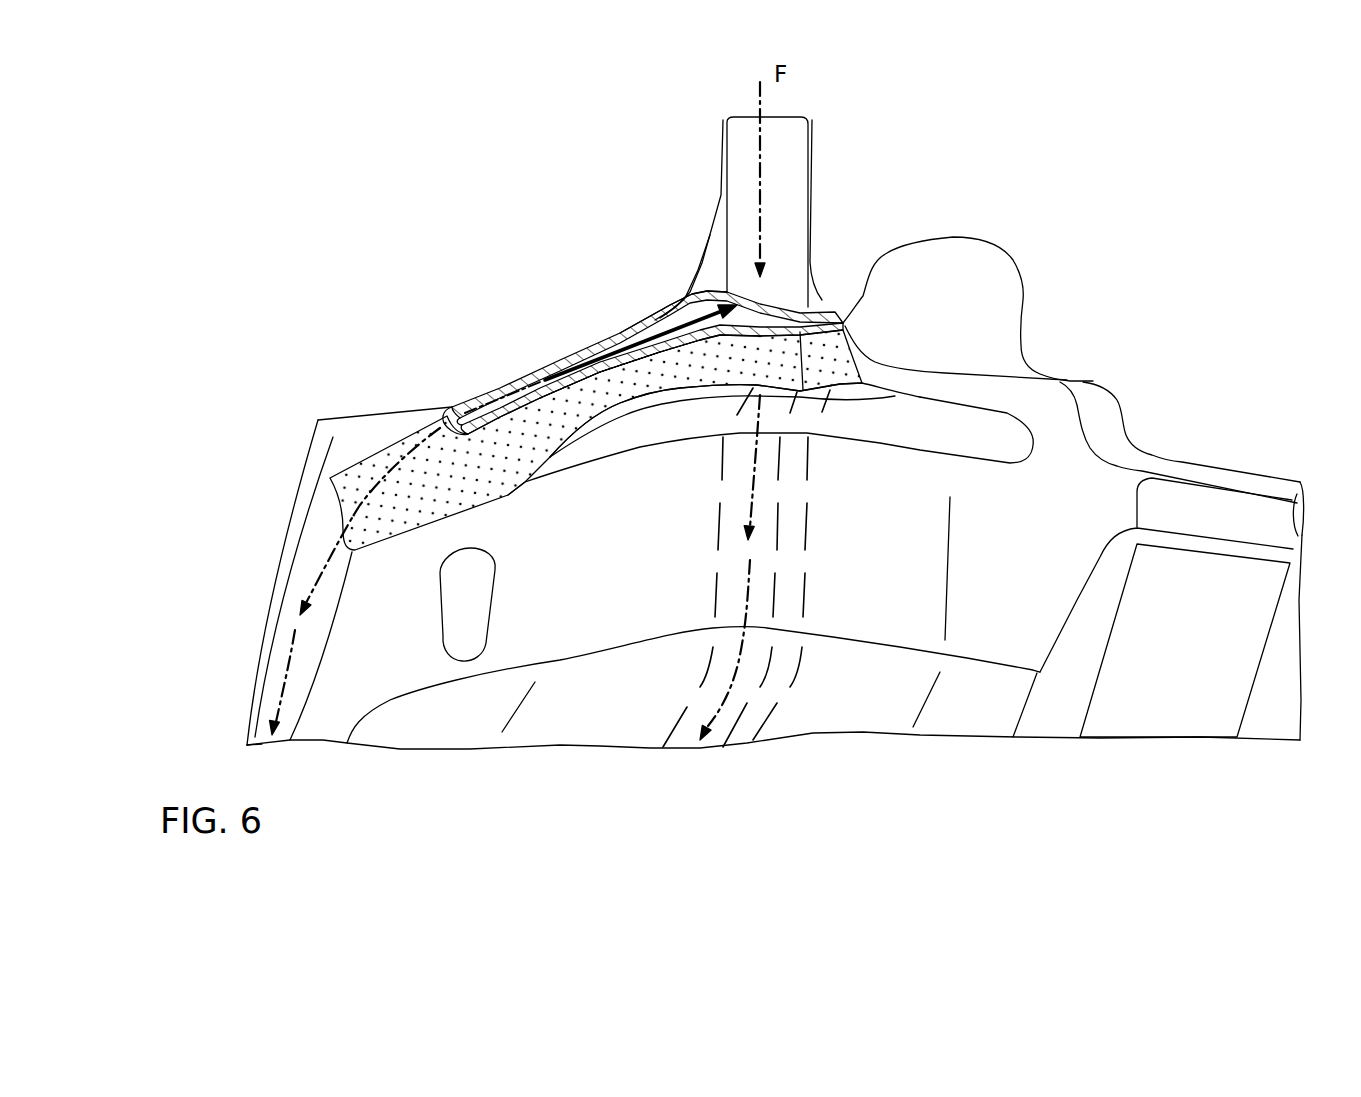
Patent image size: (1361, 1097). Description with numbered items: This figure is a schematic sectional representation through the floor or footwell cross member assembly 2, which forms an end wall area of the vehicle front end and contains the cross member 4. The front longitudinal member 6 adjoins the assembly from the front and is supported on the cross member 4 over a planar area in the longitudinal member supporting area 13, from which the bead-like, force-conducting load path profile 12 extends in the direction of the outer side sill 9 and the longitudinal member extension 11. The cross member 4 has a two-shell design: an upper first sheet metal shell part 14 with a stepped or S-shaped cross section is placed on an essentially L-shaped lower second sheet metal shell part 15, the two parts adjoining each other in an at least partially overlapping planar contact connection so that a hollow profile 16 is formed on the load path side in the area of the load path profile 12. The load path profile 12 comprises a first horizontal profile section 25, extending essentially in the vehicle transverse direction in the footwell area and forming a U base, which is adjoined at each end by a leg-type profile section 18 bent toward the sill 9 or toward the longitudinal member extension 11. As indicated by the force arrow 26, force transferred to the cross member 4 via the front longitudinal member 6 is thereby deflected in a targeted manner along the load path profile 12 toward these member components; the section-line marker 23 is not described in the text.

The cross member assembly 2 is at (1066, 339).
The cross member 4 is at (661, 531).
The front longitudinal member 6 is at (791, 143).
The side sill 9 is at (252, 735).
The longitudinal member extension 11 is at (808, 523).
The load path profile 12 is at (648, 312).
The longitudinal member supporting area 13 is at (816, 302).
The first sheet metal shell part 14 is at (547, 370).
The second sheet metal shell part 15 is at (529, 409).
The hollow profile 16 is at (458, 412).
The leg-type profile section 18 is at (830, 350).
The load path in channel 23 is at (496, 402).
The first horizontal profile section 25 is at (615, 385).
The force arrow 26 is at (748, 610).